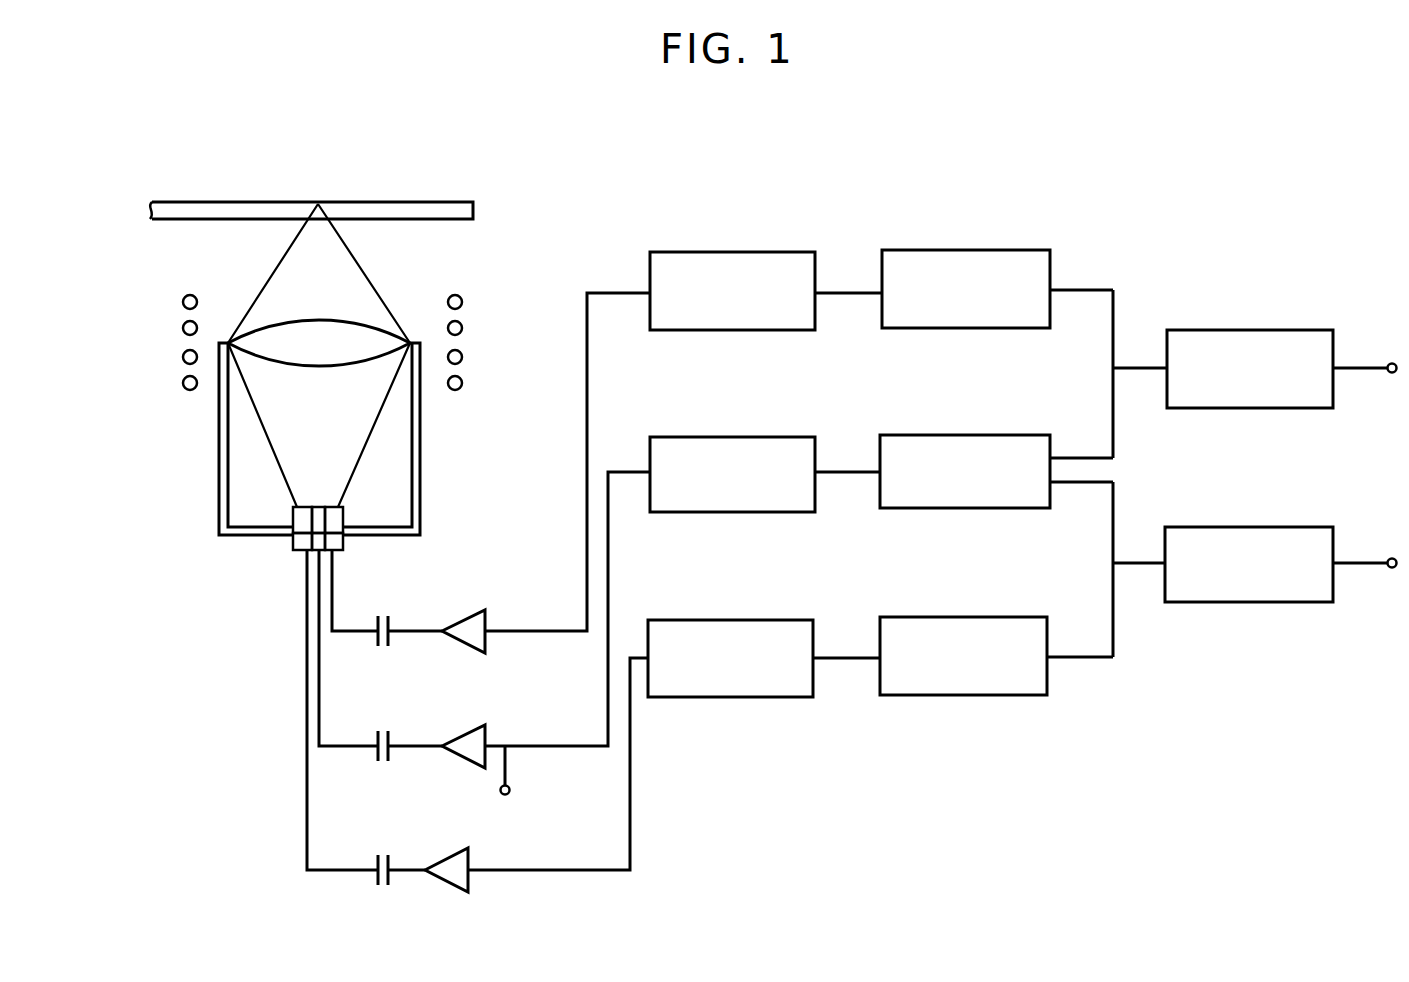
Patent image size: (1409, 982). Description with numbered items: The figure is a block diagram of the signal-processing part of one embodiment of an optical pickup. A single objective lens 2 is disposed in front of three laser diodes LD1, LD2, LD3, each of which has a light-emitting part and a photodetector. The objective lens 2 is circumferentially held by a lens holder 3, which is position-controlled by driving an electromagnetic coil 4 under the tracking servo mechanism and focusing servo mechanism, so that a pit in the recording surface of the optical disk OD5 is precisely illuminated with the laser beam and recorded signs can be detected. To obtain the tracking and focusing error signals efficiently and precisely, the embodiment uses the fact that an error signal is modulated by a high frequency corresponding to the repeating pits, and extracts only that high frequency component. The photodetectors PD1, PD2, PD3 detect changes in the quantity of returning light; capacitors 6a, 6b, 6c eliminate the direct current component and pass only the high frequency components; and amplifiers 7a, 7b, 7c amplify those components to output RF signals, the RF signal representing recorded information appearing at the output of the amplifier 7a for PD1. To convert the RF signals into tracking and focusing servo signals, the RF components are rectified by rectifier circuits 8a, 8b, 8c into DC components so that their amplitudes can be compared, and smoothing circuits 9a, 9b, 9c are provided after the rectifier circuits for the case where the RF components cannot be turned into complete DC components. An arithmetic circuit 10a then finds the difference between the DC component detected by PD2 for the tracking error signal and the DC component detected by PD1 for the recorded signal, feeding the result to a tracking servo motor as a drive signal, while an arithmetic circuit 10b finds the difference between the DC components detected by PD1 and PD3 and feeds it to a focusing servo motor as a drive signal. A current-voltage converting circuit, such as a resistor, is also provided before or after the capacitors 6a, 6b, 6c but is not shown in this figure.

The optical disk OD5 is at (400, 201).
The objective lens 2 is at (365, 327).
The lens holder 3 is at (421, 430).
The electromagnetic coil 4 is at (453, 355).
The laser diode LD1 is at (302, 518).
The laser diode LD2 is at (340, 518).
The laser diode LD3 is at (320, 518).
The photodetector PD1 is at (307, 553).
The photodetector PD2 is at (340, 543).
The photodetector PD3 is at (302, 542).
The capacitor 6a is at (377, 760).
The capacitor 6b is at (377, 642).
The capacitor 6c is at (377, 860).
The amplifier 7a is at (480, 733).
The amplifier 7b is at (483, 620).
The amplifier 7c is at (455, 866).
The rectifier circuit 8a is at (738, 441).
The rectifier circuit 8b is at (743, 257).
The rectifier circuit 8c is at (737, 626).
The smoothing circuit 9a is at (968, 441).
The smoothing circuit 9b is at (970, 256).
The smoothing circuit 9c is at (977, 624).
The arithmetic circuit 10a is at (1253, 340).
The arithmetic circuit 10b is at (1247, 534).